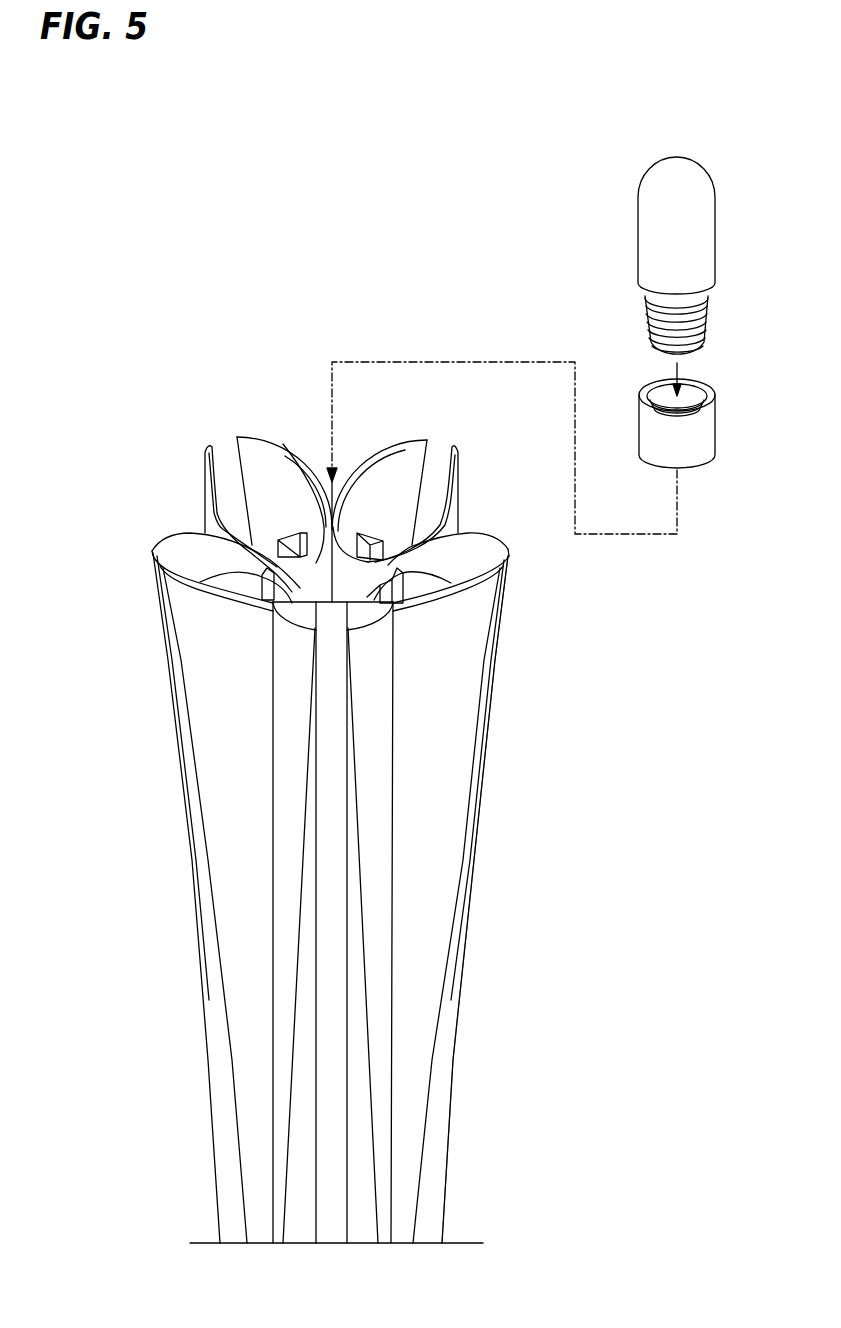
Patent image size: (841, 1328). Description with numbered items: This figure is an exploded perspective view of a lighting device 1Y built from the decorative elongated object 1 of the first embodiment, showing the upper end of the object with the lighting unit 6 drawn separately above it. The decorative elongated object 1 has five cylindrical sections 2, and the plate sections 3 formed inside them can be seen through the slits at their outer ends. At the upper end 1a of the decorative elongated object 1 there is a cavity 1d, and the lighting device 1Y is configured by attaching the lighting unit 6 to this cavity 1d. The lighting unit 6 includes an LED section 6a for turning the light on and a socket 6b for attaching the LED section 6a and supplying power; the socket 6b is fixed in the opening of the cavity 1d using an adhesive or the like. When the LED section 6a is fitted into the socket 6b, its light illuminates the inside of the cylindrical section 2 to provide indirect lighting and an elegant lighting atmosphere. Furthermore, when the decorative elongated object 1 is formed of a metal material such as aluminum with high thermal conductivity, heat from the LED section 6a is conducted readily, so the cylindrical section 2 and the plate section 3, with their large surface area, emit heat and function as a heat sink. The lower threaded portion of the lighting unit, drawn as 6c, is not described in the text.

The lighting device 1Y is at (228, 362).
The decorative elongated object 1 is at (193, 887).
The upper end 1a is at (480, 533).
The cavity 1d is at (284, 457).
The cylindrical section 2 is at (503, 612).
The plate section 3 is at (265, 573).
The lighting unit 6 is at (594, 241).
The LED section 6a is at (715, 240).
The socket 6b is at (707, 321).
The socket 6c is at (715, 430).